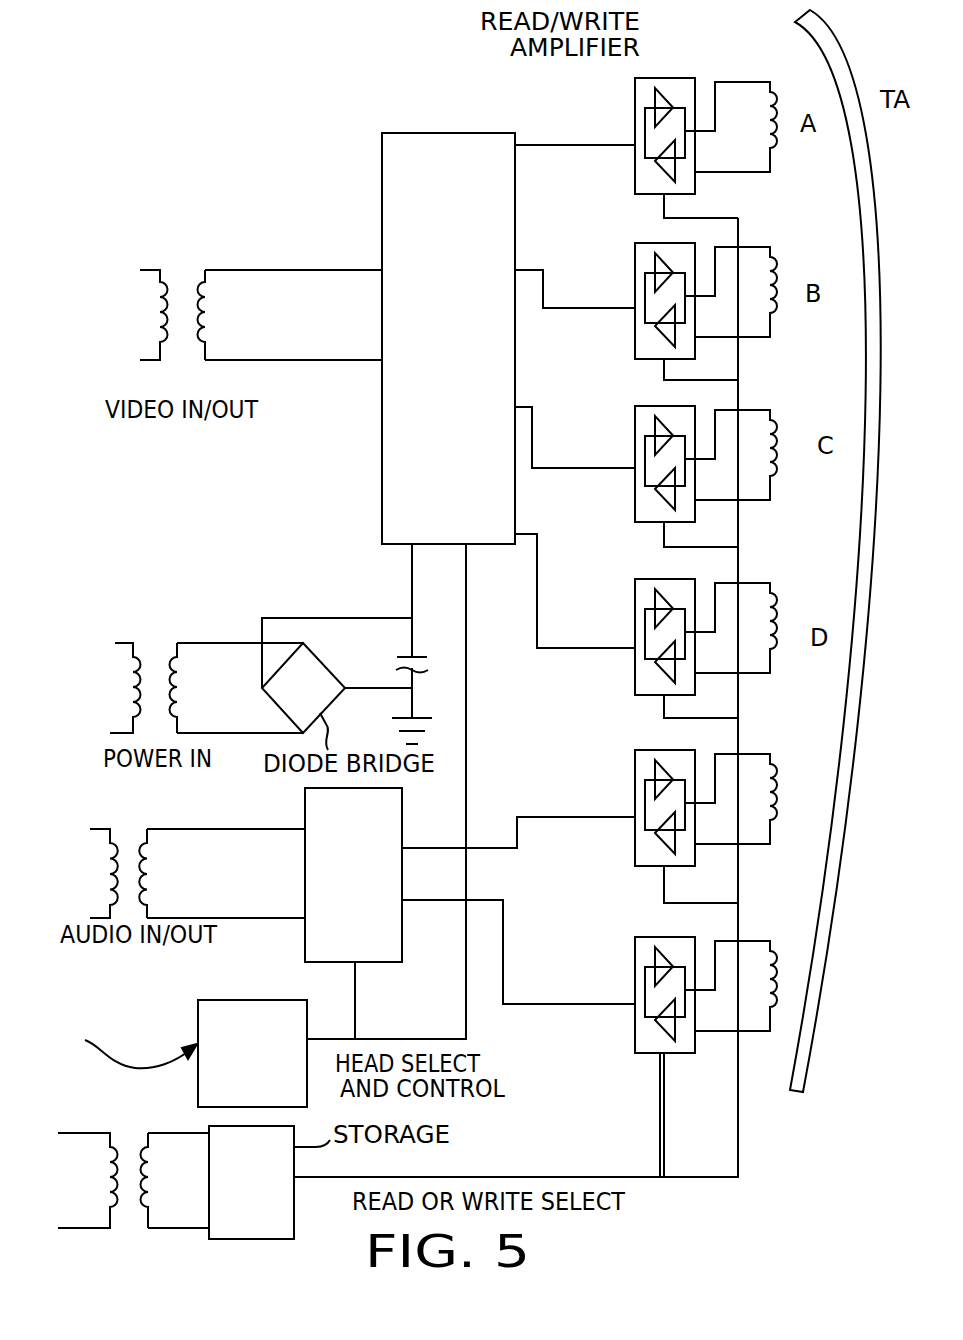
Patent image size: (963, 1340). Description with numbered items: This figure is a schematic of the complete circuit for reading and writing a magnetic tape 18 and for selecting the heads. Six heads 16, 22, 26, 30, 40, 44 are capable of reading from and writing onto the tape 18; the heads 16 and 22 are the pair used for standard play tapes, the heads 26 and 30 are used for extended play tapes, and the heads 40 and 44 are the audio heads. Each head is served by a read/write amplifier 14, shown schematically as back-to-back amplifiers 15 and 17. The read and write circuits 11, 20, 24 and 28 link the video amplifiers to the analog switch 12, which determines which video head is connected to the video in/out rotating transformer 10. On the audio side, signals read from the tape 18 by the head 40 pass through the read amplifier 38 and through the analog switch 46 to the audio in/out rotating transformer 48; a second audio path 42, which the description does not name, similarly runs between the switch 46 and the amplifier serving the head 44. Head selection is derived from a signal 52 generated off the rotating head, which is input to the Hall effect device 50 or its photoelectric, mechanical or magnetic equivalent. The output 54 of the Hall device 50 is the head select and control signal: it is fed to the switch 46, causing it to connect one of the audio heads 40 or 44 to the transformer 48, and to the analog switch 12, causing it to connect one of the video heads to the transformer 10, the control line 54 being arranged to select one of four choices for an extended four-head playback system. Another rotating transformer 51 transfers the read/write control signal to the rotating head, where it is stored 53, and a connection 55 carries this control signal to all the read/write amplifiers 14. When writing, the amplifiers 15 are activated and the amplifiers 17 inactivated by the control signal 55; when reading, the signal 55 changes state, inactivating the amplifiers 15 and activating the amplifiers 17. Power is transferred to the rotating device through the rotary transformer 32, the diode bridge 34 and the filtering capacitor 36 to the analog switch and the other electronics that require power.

The video in/out rotating transformer 10 is at (180, 268).
The read and write circuit 11 is at (635, 125).
The analog switch 12 is at (461, 193).
The read/write amplifier 14 is at (666, 78).
The amplifier 15 is at (657, 98).
The head 16 is at (770, 95).
The amplifier 17 is at (658, 163).
The tape 18 is at (863, 75).
The read and write circuit 20 is at (635, 262).
The head 22 is at (781, 282).
The read and write circuit 24 is at (635, 430).
The head 26 is at (785, 439).
The read and write circuit 28 is at (635, 603).
The head 30 is at (788, 619).
The rotary transformer 32 is at (153, 650).
The diode bridge 34 is at (317, 701).
The filtering capacitor 36 is at (399, 689).
The read amplifier 38 is at (635, 770).
The audio head 40 is at (780, 774).
The audio signal line to amplifier F 42 is at (635, 965).
The audio head 44 is at (786, 974).
The analog switch 46 is at (357, 836).
The audio in/out rotating transformer 48 is at (128, 838).
The Hall effect device 50 is at (262, 998).
The rotating transformer 51 is at (131, 1146).
The signal 52 is at (141, 1038).
The read/write control signal storage 53 is at (262, 1185).
The head select and control signal 54 is at (428, 1023).
The read/write control connection 55 is at (560, 1175).